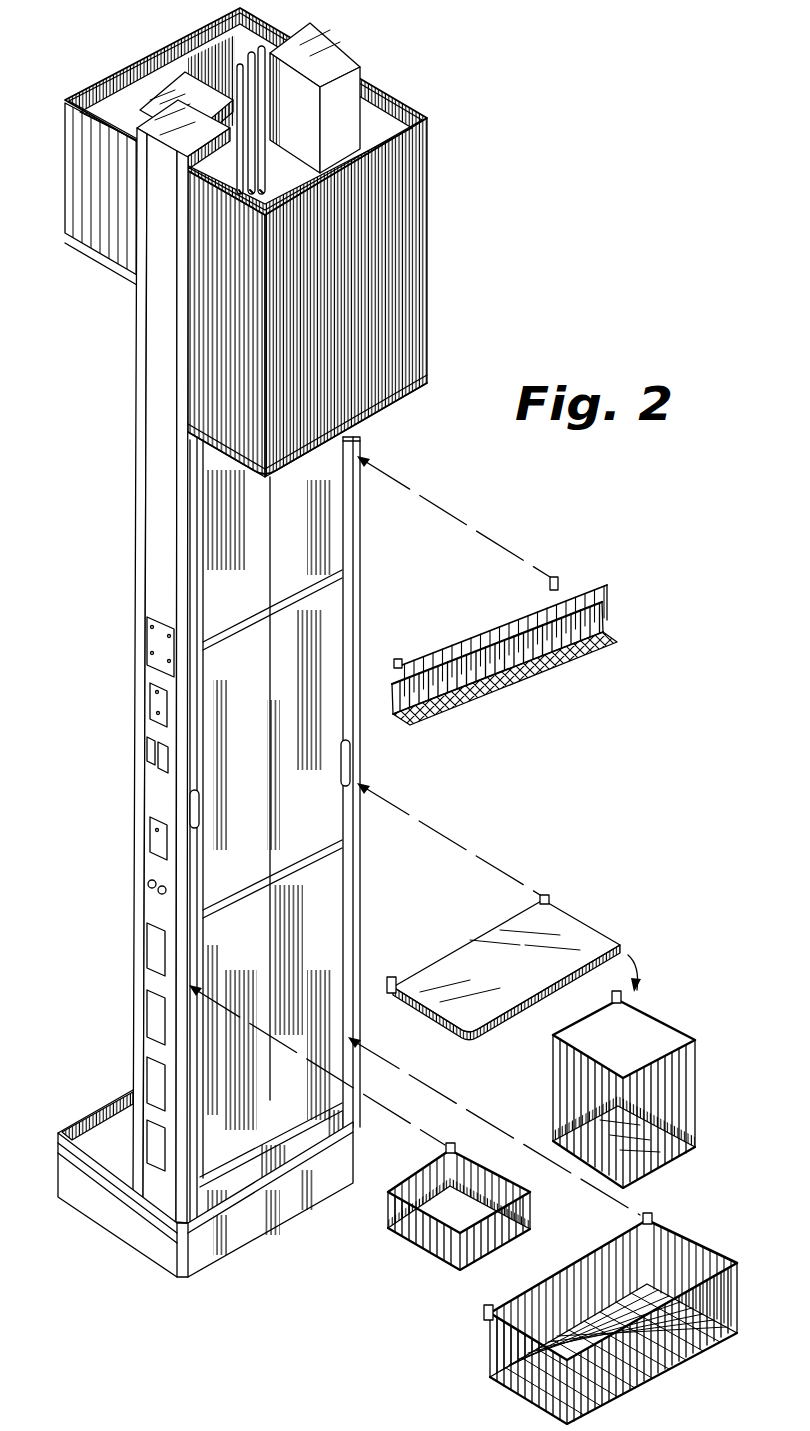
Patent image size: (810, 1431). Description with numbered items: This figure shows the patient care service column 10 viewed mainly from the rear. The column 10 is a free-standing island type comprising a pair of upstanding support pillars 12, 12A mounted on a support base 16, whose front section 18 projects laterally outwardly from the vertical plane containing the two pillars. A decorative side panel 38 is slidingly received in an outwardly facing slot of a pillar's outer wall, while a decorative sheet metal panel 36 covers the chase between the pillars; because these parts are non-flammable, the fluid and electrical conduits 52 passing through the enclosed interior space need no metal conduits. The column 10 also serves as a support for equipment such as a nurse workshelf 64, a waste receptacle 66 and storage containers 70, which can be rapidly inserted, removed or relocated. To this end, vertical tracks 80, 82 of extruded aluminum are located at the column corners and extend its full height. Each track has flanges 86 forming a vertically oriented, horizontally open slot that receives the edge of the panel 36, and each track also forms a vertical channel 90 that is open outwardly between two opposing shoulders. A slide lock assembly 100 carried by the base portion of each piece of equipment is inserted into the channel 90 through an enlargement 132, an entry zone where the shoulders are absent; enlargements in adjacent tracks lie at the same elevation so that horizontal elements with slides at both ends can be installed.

The patient care service column 10 is at (452, 235).
The support pillar 12 is at (163, 130).
The support pillar 12A is at (343, 53).
The support base 16 is at (93, 1093).
The front section of the base 18 is at (113, 1233).
The sheet metal panel 36 is at (290, 832).
The decorative side panel 38 is at (157, 560).
The fluid and electrical conduits 52 is at (238, 58).
The nurse workshelf 64 is at (590, 922).
The waste receptacle 66 is at (685, 1028).
The storage containers 70 is at (612, 594).
The vertical track 80 is at (187, 758).
The vertical track 82 is at (358, 592).
The flanges 86 is at (197, 598).
The vertical channel 90 is at (193, 893).
The slide lock assembly 100 is at (554, 580).
The enlargement 132 is at (193, 827).